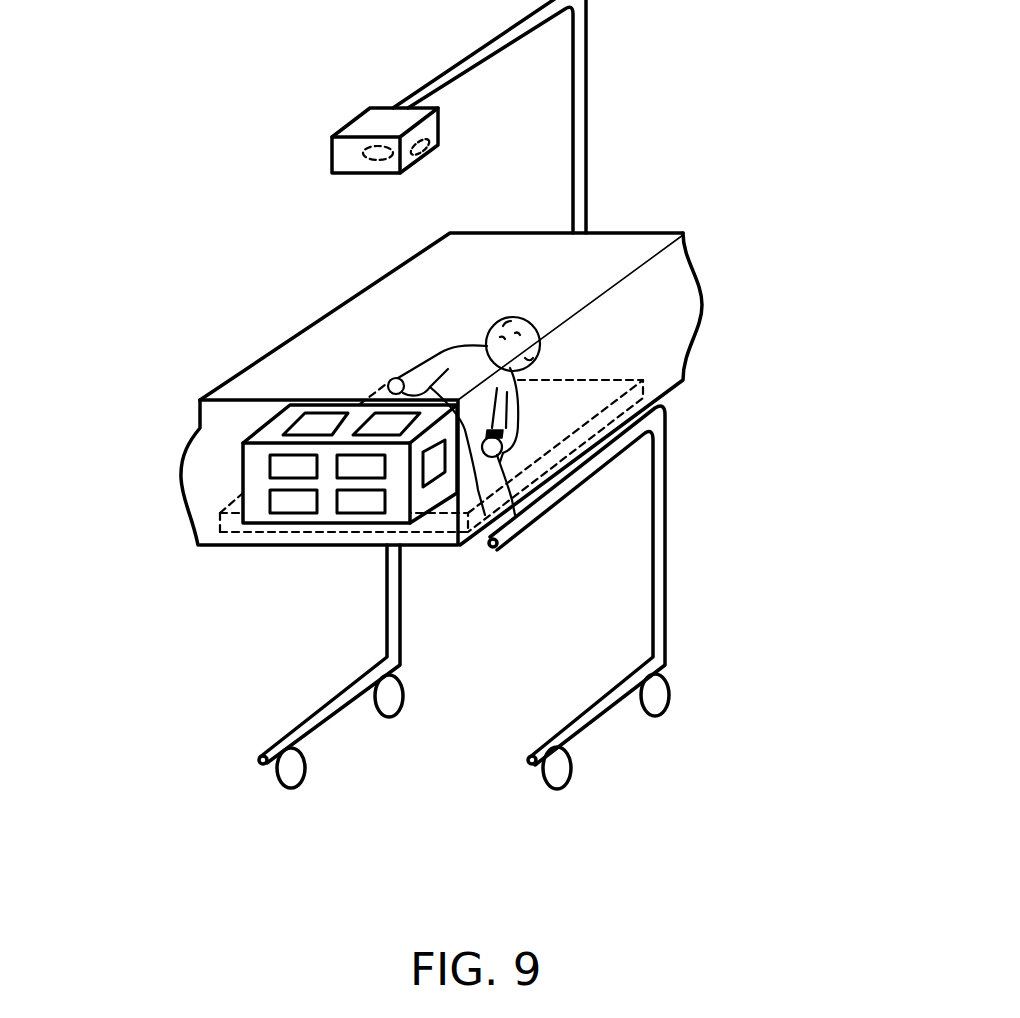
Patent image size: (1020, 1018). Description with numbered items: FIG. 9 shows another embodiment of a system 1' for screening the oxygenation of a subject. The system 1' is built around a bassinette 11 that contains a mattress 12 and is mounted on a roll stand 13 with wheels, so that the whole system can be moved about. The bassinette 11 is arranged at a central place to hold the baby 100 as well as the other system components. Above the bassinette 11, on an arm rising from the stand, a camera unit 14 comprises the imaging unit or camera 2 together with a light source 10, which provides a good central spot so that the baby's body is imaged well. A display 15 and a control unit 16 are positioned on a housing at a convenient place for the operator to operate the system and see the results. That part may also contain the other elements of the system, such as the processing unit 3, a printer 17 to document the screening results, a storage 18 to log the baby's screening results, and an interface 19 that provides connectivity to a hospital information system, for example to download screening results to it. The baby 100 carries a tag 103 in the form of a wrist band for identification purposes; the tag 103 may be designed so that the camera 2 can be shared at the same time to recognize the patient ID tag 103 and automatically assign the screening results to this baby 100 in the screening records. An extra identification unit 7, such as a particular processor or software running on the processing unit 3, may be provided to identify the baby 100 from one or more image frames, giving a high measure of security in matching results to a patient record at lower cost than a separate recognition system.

The system 1' is at (698, 80).
The imaging unit (camera) 2 is at (363, 153).
The processing unit 3 is at (272, 465).
The identification unit 7 is at (437, 480).
The light source 10 is at (431, 151).
The bassinette 11 is at (685, 357).
The mattress 12 is at (628, 440).
The roll stand 13 is at (666, 607).
The camera unit 14 is at (345, 128).
The display 15 is at (293, 427).
The control unit 16 is at (345, 423).
The printer 17 is at (287, 515).
The storage 18 is at (358, 515).
The interface 19 is at (335, 478).
The baby 100 is at (445, 353).
The tag 103 is at (490, 448).